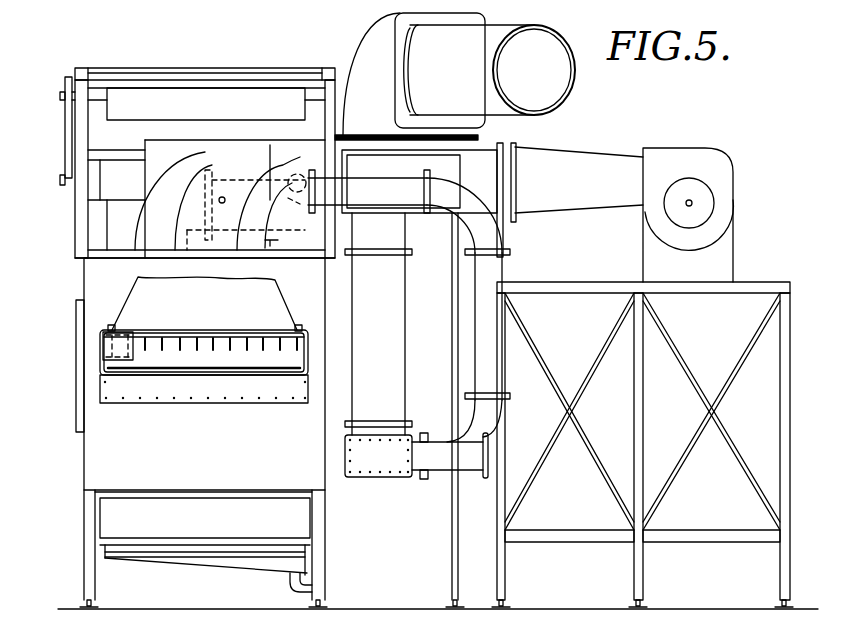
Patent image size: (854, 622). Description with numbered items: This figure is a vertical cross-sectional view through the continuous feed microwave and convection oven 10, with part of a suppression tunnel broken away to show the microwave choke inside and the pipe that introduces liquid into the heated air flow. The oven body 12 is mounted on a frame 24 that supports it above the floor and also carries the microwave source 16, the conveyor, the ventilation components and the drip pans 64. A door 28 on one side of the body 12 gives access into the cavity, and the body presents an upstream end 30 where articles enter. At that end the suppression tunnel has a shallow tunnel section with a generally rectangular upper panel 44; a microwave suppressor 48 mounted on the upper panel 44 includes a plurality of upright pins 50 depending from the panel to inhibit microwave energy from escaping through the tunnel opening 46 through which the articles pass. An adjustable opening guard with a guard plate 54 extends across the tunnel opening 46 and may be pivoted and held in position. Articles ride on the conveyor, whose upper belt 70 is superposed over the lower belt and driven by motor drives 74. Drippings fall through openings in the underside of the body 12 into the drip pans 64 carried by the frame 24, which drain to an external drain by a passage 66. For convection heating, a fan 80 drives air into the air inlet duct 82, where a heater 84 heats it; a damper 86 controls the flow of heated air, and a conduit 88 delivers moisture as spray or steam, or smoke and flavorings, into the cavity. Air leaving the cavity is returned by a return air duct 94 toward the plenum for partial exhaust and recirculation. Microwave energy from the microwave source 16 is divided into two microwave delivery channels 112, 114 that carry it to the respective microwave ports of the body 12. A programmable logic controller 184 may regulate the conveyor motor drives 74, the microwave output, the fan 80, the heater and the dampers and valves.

The continuous feed microwave and convection oven 10 is at (695, 98).
The body 12 is at (84, 455).
The microwave source 16 is at (382, 484).
The frame 24 is at (764, 280).
The door 28 is at (80, 380).
The upstream end 30 is at (110, 328).
The upper panel 44 is at (237, 337).
The tunnel opening 46 is at (190, 362).
The microwave suppressor 48 is at (282, 328).
The upright pins 50 is at (265, 345).
The guard plate 54 is at (128, 360).
The drip pans 64 is at (297, 522).
The passage 66 is at (298, 592).
The upper belt 70 is at (143, 66).
The motor drives 74 is at (65, 80).
The fan 80 is at (690, 163).
The air inlet duct 82 is at (603, 152).
The heater 84 is at (452, 175).
The damper 86 is at (303, 182).
The conduit 88 is at (222, 197).
The return air duct 94 is at (140, 292).
The microwave delivery channel 112 is at (482, 335).
The microwave delivery channel 114 is at (398, 320).
The programmable logic controller 184 is at (410, 166).